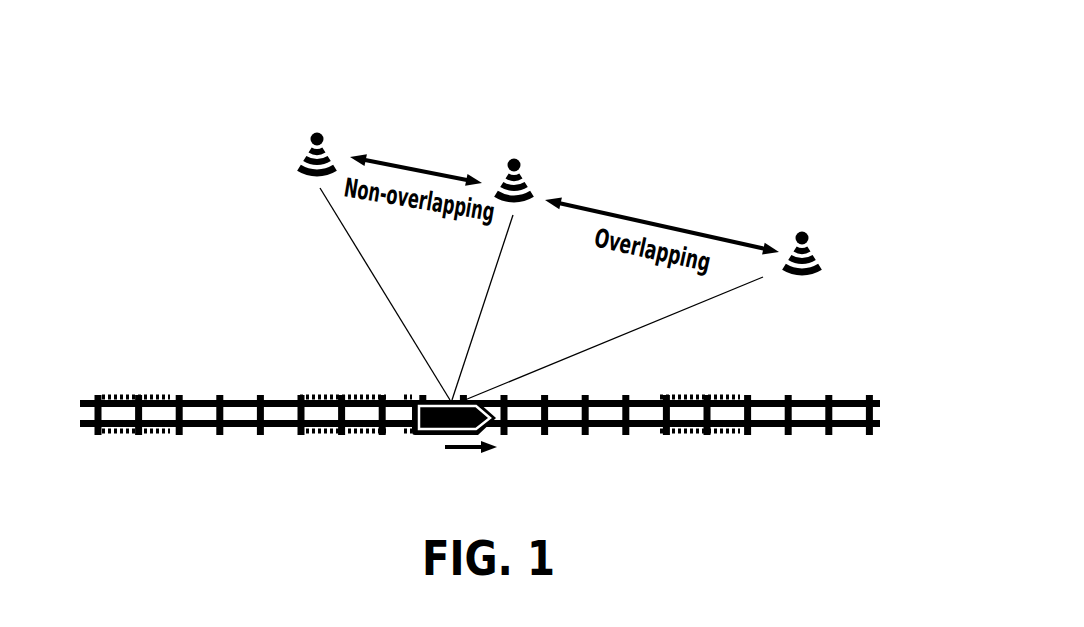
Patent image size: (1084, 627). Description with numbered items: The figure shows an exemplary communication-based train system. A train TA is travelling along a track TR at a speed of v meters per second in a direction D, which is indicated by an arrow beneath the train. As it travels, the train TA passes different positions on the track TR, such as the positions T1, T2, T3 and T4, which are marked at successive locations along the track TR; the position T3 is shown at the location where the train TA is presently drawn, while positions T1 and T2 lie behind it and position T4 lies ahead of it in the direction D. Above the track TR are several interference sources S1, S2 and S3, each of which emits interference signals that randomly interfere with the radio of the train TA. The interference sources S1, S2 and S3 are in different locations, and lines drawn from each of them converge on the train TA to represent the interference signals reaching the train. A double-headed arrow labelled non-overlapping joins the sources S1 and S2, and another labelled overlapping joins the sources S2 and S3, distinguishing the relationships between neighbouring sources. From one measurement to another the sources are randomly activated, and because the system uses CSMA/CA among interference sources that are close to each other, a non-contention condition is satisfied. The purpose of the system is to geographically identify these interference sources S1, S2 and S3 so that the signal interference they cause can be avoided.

The interference source S1 is at (374, 248).
The interference source S2 is at (492, 262).
The interference source S3 is at (640, 298).
The position T1 is at (155, 435).
The position T2 is at (310, 435).
The position T3 is at (425, 400).
The position T4 is at (686, 437).
The train TA is at (414, 439).
The track TR is at (847, 432).
The direction D is at (465, 457).